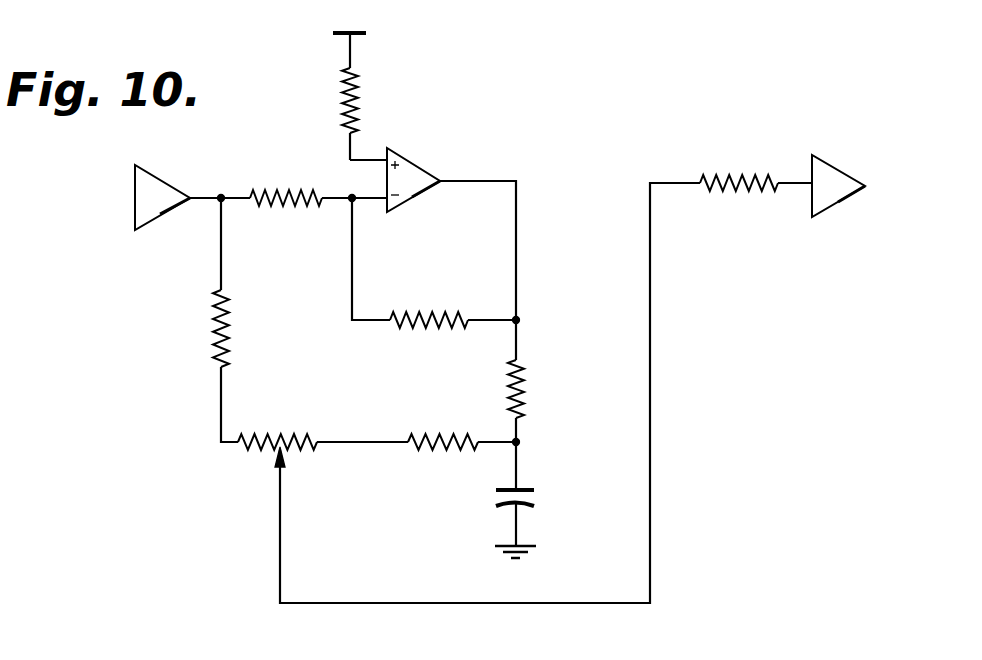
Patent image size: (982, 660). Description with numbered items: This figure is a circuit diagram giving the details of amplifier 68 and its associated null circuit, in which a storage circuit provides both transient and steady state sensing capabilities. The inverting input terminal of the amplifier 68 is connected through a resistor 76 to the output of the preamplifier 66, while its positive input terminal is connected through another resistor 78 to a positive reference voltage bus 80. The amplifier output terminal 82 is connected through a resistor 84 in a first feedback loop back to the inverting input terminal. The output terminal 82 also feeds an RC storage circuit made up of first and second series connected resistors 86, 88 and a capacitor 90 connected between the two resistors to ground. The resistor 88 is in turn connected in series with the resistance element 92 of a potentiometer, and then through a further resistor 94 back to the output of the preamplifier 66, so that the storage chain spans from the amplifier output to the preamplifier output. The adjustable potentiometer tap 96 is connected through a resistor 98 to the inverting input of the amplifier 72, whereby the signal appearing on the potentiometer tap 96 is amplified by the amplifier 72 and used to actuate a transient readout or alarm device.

The preamplifier 66 is at (133, 189).
The amplifier 68 is at (410, 162).
The amplifier 72 is at (843, 172).
The resistor 76 is at (287, 206).
The resistor 78 is at (356, 77).
The positive reference voltage bus 80 is at (347, 31).
The amplifier output terminal 82 is at (446, 180).
The resistor 84 is at (425, 327).
The first series connected resistor 86 is at (522, 368).
The second series connected resistor 88 is at (437, 451).
The capacitor 90 is at (536, 497).
The resistance element of a potentiometer 92 is at (253, 449).
The resistor 94 is at (212, 364).
The adjustable potentiometer tap 96 is at (286, 460).
The resistor 98 is at (748, 192).